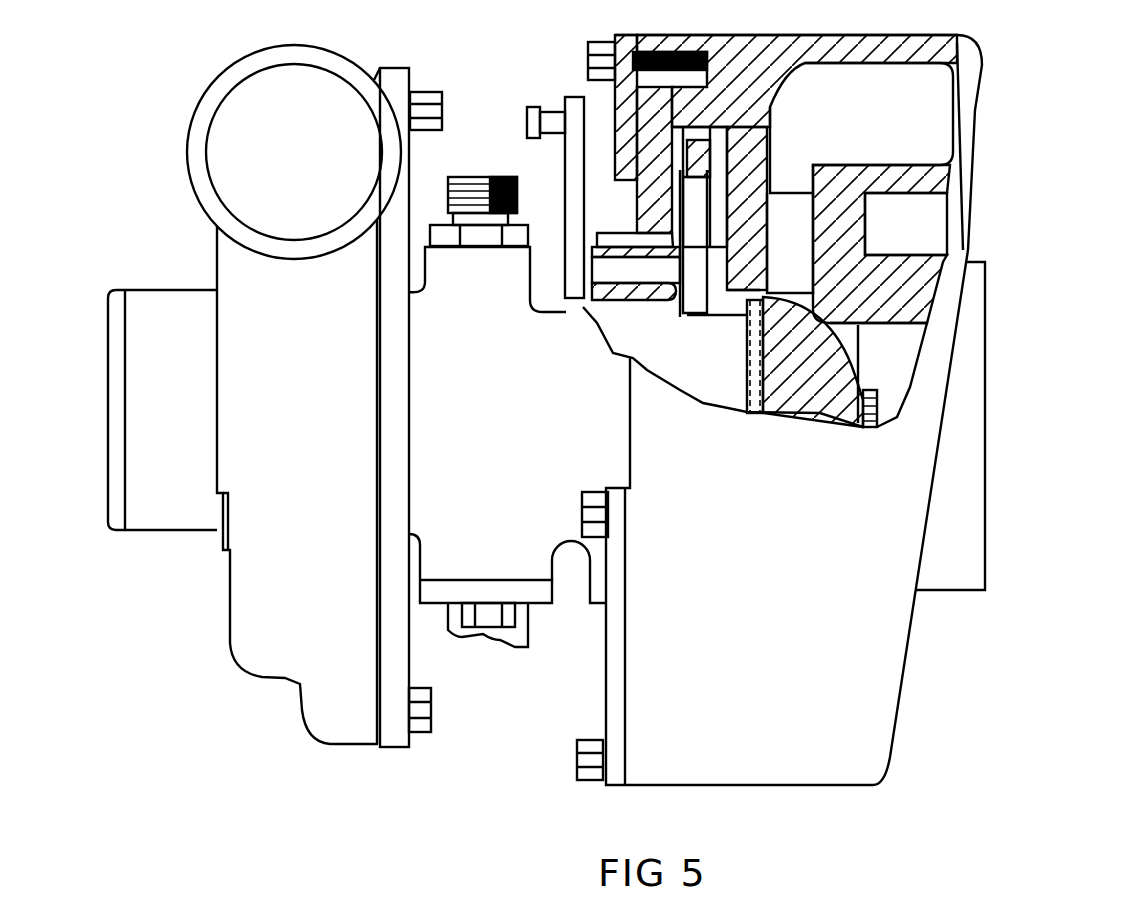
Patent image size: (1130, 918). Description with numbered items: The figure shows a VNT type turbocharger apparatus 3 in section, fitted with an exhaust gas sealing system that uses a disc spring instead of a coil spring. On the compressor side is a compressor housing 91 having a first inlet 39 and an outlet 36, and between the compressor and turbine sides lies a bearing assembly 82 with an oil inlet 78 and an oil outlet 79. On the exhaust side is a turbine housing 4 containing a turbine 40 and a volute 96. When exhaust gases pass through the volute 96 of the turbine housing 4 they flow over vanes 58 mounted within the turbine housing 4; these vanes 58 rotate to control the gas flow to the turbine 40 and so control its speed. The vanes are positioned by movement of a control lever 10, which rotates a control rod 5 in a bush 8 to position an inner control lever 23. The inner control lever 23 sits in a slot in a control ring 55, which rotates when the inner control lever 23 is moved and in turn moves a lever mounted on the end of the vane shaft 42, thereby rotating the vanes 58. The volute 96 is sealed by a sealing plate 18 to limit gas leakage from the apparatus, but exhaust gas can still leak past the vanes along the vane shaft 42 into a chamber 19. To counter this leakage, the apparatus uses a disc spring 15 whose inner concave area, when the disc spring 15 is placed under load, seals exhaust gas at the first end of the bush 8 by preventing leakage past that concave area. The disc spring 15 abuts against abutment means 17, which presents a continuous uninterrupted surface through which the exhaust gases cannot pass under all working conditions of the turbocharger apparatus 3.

The VNT type turbocharger apparatus 3 is at (1020, 155).
The turbine housing 4 is at (875, 657).
The control rod 5 is at (630, 268).
The bush 8 is at (638, 297).
The control lever 10 is at (578, 120).
The disc spring 15 is at (596, 300).
The abutment means 17 is at (585, 240).
The sealing plate 18 is at (747, 348).
The chamber 19 is at (740, 128).
The inner control lever 23 is at (700, 210).
The outlet 36 is at (305, 162).
The first inlet 39 is at (108, 412).
The turbine 40 is at (830, 348).
The vane shaft 42 is at (725, 258).
The control ring 55 is at (703, 150).
The vanes 58 is at (790, 226).
The oil inlet 78 is at (480, 177).
The oil outlet 79 is at (480, 638).
The bearing assembly 82 is at (515, 492).
The compressor housing 91 is at (252, 402).
The volute 96 is at (942, 92).